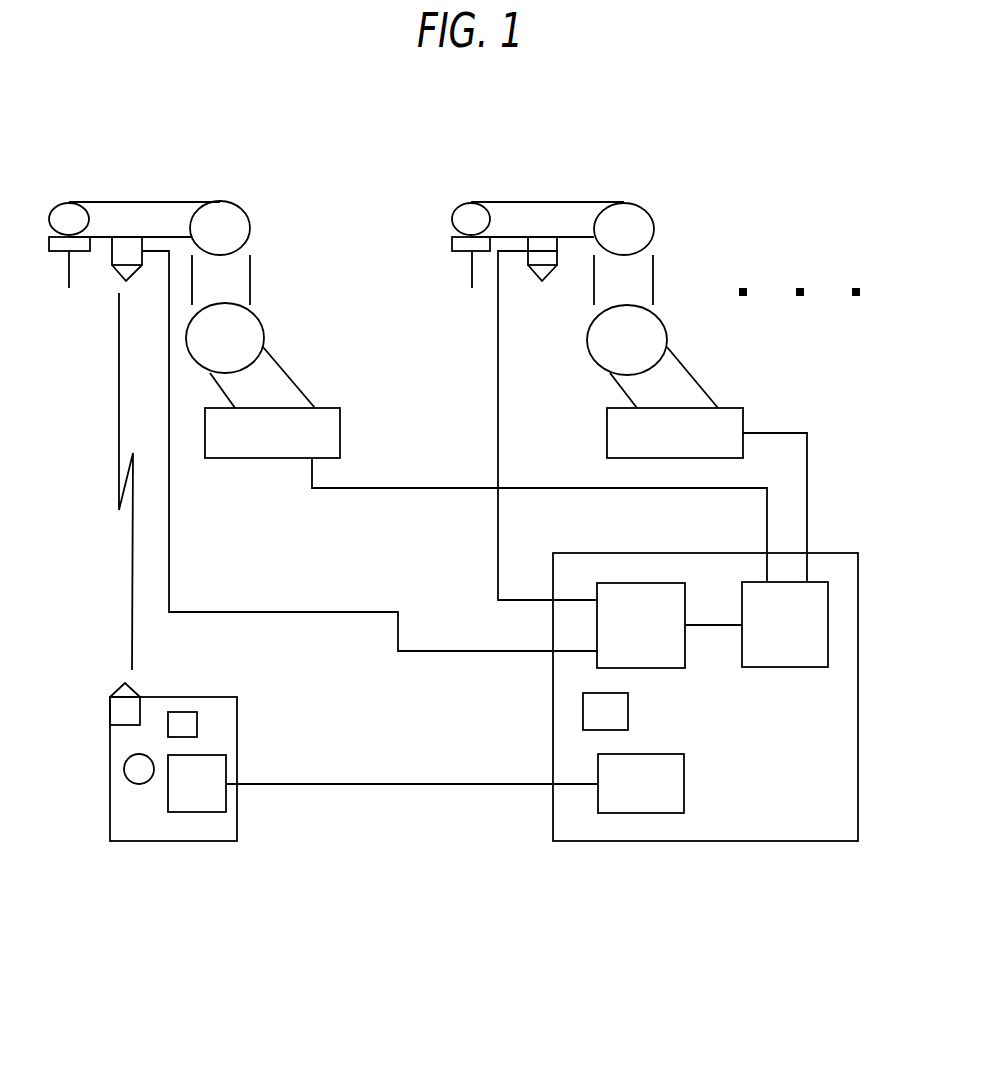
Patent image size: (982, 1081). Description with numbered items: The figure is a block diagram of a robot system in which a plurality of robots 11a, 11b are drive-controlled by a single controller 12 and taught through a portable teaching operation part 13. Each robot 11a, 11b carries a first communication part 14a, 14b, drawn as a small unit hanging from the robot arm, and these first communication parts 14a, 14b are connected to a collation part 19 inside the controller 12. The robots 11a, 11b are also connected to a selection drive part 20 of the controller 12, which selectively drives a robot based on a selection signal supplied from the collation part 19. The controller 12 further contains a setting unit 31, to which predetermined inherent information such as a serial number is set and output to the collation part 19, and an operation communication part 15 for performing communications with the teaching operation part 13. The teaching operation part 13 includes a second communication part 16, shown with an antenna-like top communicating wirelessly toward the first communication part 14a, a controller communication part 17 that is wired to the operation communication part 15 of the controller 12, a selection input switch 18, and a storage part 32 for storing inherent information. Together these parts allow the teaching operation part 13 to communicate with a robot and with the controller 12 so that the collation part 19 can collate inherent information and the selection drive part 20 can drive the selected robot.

The robot 11a is at (147, 202).
The robot 11b is at (543, 202).
The first communication part 14a is at (115, 273).
The first communication part 14b is at (548, 288).
The controller 12 is at (710, 841).
The collation part 19 is at (643, 583).
The selection drive part 20 is at (828, 622).
The setting unit 31 is at (583, 712).
The operation communication part 15 is at (643, 813).
The teaching operation part 13 is at (237, 740).
The second communication part 16 is at (110, 710).
The storage part 32 is at (183, 712).
The selection input switch 18 is at (124, 769).
The controller communication part 17 is at (195, 812).